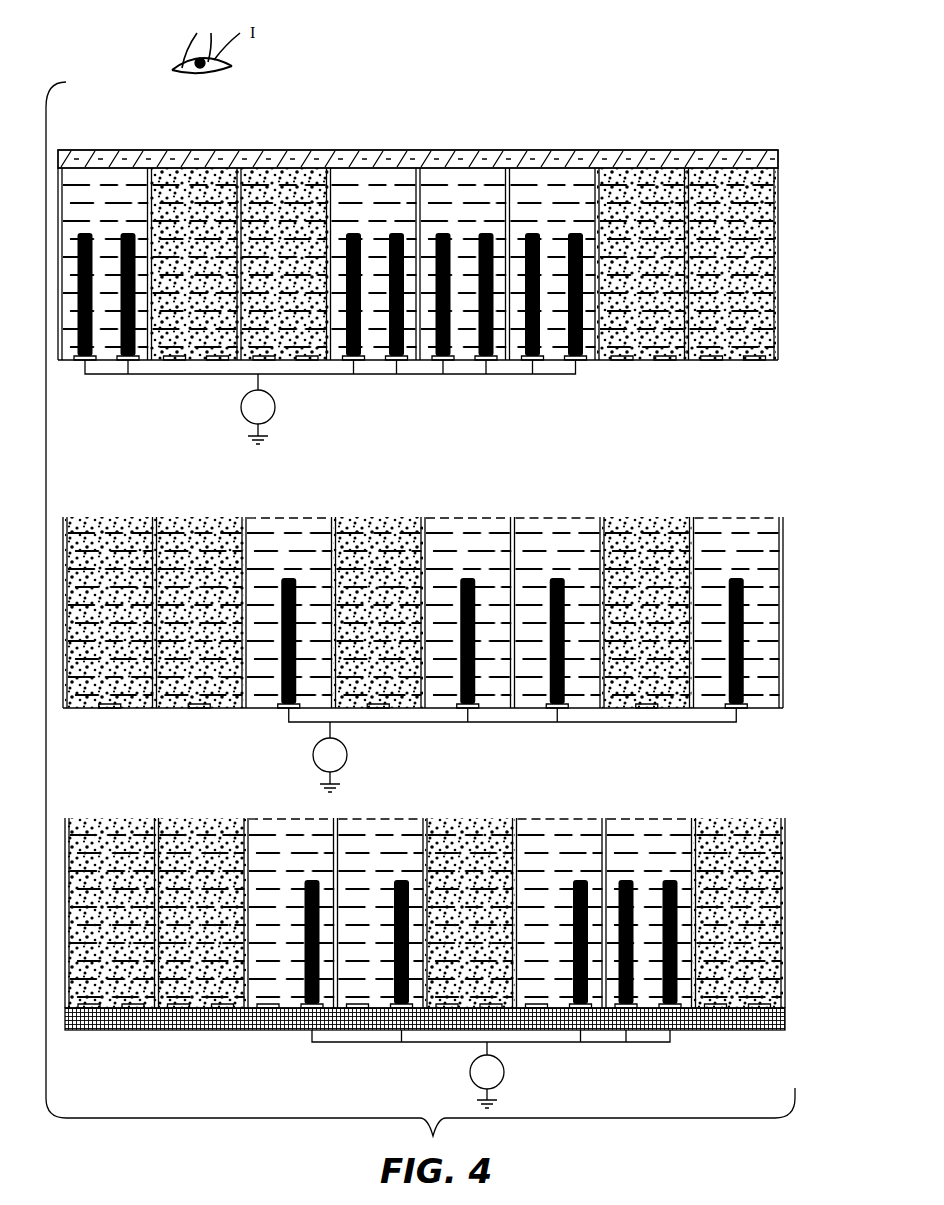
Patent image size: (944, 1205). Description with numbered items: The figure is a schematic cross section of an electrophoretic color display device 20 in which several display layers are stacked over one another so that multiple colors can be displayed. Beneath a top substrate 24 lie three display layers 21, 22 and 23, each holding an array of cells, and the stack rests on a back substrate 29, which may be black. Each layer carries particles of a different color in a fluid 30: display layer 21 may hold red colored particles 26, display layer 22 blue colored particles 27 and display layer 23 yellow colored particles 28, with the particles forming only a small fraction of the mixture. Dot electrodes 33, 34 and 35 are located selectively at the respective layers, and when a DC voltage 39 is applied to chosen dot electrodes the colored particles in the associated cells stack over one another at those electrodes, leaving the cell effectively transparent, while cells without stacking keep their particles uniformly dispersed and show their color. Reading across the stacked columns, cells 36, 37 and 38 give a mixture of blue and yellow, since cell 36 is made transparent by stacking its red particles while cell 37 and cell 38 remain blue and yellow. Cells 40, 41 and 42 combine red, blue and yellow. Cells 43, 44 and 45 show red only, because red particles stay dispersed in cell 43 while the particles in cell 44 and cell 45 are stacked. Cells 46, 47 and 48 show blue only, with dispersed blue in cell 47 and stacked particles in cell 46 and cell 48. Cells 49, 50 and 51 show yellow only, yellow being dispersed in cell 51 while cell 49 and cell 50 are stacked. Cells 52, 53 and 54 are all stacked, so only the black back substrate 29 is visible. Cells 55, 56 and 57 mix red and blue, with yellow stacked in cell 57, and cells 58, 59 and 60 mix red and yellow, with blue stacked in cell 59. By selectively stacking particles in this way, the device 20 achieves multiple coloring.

The electrophoretic display device 20 is at (665, 101).
The display layer 21 is at (788, 168).
The display layer 22 is at (788, 517).
The display layer 23 is at (792, 818).
The top substrate 24 is at (782, 150).
The red colored particles 26 is at (206, 180).
The blue colored particles 27 is at (213, 535).
The yellow colored particles 28 is at (220, 825).
The back substrate 29 is at (730, 1030).
The fluid 30 is at (738, 358).
The dot electrode 33 is at (354, 362).
The dot electrode 34 is at (468, 710).
The dot electrode 35 is at (312, 1010).
The cell 36 is at (150, 145).
The cell 37 is at (65, 517).
The cell 38 is at (67, 819).
The DC voltage 39 is at (276, 408).
The cell 40 is at (239, 145).
The cell 41 is at (154, 517).
The cell 42 is at (156, 819).
The cell 43 is at (239, 145).
The cell 44 is at (334, 517).
The cell 45 is at (336, 819).
The cell 46 is at (328, 145).
The cell 47 is at (423, 517).
The cell 48 is at (425, 819).
The cell 49 is at (508, 145).
The cell 50 is at (423, 517).
The cell 51 is at (425, 819).
The cell 52 is at (597, 145).
The cell 53 is at (512, 517).
The cell 54 is at (514, 819).
The cell 55 is at (597, 145).
The cell 56 is at (692, 517).
The cell 57 is at (694, 819).
The cell 58 is at (686, 145).
The cell 59 is at (781, 517).
The cell 60 is at (783, 819).